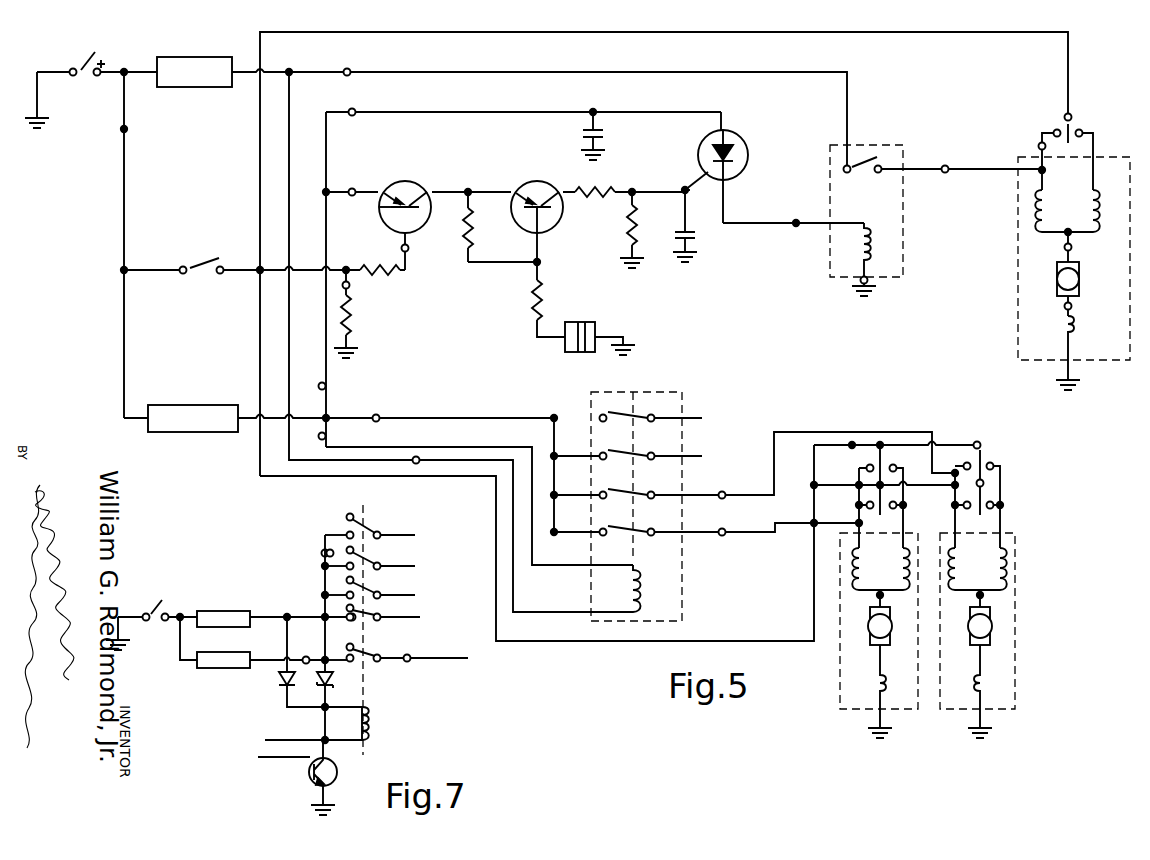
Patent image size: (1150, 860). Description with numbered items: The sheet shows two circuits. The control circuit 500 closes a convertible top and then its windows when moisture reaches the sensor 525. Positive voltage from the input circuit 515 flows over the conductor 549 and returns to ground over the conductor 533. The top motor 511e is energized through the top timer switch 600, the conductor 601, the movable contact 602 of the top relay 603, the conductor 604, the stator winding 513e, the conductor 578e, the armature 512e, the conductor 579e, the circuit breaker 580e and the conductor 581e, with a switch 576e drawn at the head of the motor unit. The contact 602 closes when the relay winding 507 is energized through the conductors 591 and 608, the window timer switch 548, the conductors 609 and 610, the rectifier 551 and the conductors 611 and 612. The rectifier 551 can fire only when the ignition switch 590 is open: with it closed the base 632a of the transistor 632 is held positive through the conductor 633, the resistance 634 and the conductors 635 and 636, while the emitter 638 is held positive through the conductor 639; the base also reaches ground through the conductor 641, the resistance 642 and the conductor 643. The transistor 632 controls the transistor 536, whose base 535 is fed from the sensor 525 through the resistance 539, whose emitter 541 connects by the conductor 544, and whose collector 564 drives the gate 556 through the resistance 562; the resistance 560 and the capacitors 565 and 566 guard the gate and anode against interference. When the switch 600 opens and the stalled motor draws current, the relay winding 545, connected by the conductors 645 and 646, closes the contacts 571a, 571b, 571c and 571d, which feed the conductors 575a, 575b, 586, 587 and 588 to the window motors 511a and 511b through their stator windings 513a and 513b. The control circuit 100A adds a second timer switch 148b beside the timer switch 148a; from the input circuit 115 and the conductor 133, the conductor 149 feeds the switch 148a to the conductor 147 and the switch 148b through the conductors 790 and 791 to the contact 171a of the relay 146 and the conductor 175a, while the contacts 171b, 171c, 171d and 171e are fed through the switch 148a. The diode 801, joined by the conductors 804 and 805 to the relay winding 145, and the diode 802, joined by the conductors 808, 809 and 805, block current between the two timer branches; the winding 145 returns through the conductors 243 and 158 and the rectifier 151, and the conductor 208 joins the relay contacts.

In FIG. 5, the control circuit 500 is at (258, 30).
In FIG. 5, the conductor 533 is at (32, 101).
In FIG. 5, the input circuit 515 is at (90, 43).
In FIG. 5, the conductor 549 is at (108, 76).
In FIG. 5, the conductor 591 is at (124, 129).
In FIG. 5, the top timer switch 600 is at (210, 82).
In FIG. 5, the conductor 601 is at (347, 68).
In FIG. 5, the conductor 610 is at (338, 386).
In FIG. 5, the conductor 636 is at (160, 257).
In FIG. 5, the ignition switch 590 is at (206, 260).
In FIG. 5, the conductor 635 is at (302, 267).
In FIG. 5, the conductor 608 is at (124, 340).
In FIG. 5, the conductor 639 is at (352, 187).
In FIG. 5, the transistor 632 is at (425, 184).
In FIG. 5, the emitter 638 is at (402, 175).
In FIG. 5, the base 632a is at (382, 213).
In FIG. 5, the conductor 633 is at (401, 248).
In FIG. 5, the resistance 634 is at (380, 273).
In FIG. 5, the conductor 641 is at (350, 290).
In FIG. 5, the resistance 642 is at (354, 319).
In FIG. 5, the conductor 643 is at (352, 342).
In FIG. 5, the conductor 544 is at (462, 238).
In FIG. 5, the transistor 536 is at (518, 222).
In FIG. 5, the collector 564 is at (542, 188).
In FIG. 5, the emitter 541 is at (521, 184).
In FIG. 5, the base 535 is at (548, 221).
In FIG. 5, the resistance 562 is at (612, 200).
In FIG. 5, the resistance 560 is at (629, 235).
In FIG. 5, the capacitor 566 is at (582, 129).
In FIG. 5, the resistance 539 is at (532, 302).
In FIG. 5, the sensor 525 is at (580, 320).
In FIG. 5, the rectifier 551 is at (696, 140).
In FIG. 5, the gate 556 is at (698, 170).
In FIG. 5, the capacitor 565 is at (698, 232).
In FIG. 5, the conductor 611 is at (796, 226).
In FIG. 5, the top relay 603 is at (903, 195).
In FIG. 5, the movable contact 602 is at (880, 145).
In FIG. 5, the conductor 604 is at (945, 168).
In FIG. 5, the relay winding 507 is at (875, 262).
In FIG. 5, the conductor 612 is at (870, 290).
In FIG. 5, the top motor 511e is at (1018, 262).
In FIG. 5, the switch 576e is at (1038, 142).
In FIG. 5, the stator winding 513e is at (1044, 199).
In FIG. 5, the conductor 578e is at (1072, 247).
In FIG. 5, the armature 512e is at (1078, 278).
In FIG. 5, the conductor 579e is at (1072, 304).
In FIG. 5, the circuit breaker 580e is at (1074, 320).
In FIG. 5, the conductor 581e is at (1076, 378).
In FIG. 5, the window timer switch 548 is at (215, 390).
In FIG. 5, the conductor 609 is at (374, 414).
In FIG. 5, the conductor 645 is at (326, 436).
In FIG. 5, the conductor 646 is at (425, 443).
In FIG. 5, the conductor 588 is at (261, 464).
In FIG. 5, the relay contact 571d is at (600, 407).
In FIG. 5, the relay contact 571c is at (600, 445).
In FIG. 5, the relay contact 571b is at (600, 484).
In FIG. 5, the relay contact 571a is at (600, 522).
In FIG. 5, the conductor 575b is at (726, 493).
In FIG. 5, the conductor 575a is at (726, 530).
In FIG. 5, the relay winding 545 is at (640, 606).
In FIG. 5, the conductor 587 is at (854, 448).
In FIG. 5, the conductor 586 is at (836, 486).
In FIG. 5, the stator winding 513a is at (868, 568).
In FIG. 5, the window motor 511a is at (845, 711).
In FIG. 5, the stator winding 513b is at (973, 564).
In FIG. 5, the window motor 511b is at (950, 711).
In FIG. 7, the ground 133 is at (136, 614).
In FIG. 7, the switch 115 is at (164, 606).
In FIG. 7, the conductor 149 is at (190, 616).
In FIG. 7, the timer switch 148a is at (232, 602).
In FIG. 7, the conductor 147 is at (272, 616).
In FIG. 7, the conductor 790 is at (189, 640).
In FIG. 7, the second timer switch 148b is at (240, 663).
In FIG. 7, the conductor 804 is at (296, 707).
In FIG. 7, the conductor 791 is at (307, 658).
In FIG. 7, the diode 801 is at (278, 684).
In FIG. 7, the conductor 809 is at (322, 682).
In FIG. 7, the conductor 808 is at (333, 676).
In FIG. 7, the conductor 805 is at (338, 707).
In FIG. 7, the diode 802 is at (334, 688).
In FIG. 7, the relay winding 145 is at (372, 734).
In FIG. 7, the conductor 243 is at (272, 738).
In FIG. 7, the conductor 158 is at (262, 757).
In FIG. 7, the transistor 151 is at (340, 782).
In FIG. 7, the conductor 208 is at (326, 553).
In FIG. 7, the relay contact 171e is at (363, 517).
In FIG. 7, the relay contact 171d is at (363, 550).
In FIG. 7, the relay contact 171c is at (366, 582).
In FIG. 7, the relay contact 171b is at (366, 610).
In FIG. 7, the relay contact 171a is at (366, 649).
In FIG. 7, the conductor 175a is at (412, 655).
In FIG. 7, the relay 146 is at (406, 668).
In FIG. 7, the control circuit 100A is at (294, 588).